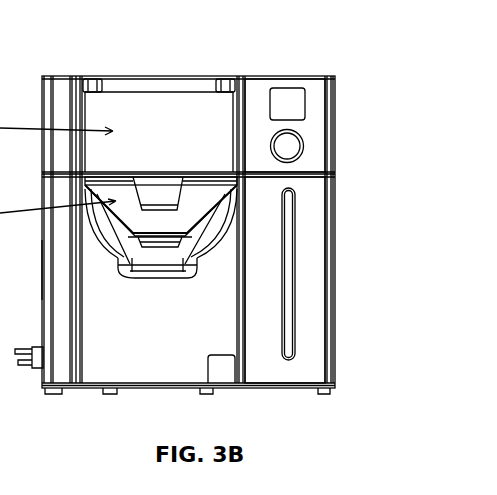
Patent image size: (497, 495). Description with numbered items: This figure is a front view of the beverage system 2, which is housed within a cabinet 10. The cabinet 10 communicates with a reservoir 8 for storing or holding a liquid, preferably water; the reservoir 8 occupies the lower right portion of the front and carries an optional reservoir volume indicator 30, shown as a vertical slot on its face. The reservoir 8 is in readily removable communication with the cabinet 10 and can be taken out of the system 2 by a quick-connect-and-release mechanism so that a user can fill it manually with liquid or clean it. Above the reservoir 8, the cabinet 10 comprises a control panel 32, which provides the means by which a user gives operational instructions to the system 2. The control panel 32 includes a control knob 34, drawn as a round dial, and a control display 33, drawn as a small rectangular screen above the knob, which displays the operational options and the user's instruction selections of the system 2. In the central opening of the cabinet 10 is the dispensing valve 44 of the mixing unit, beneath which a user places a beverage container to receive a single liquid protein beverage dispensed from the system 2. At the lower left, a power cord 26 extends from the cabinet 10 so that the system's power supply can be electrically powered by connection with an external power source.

The system 2 is at (90, 49).
The reservoir 8 is at (324, 242).
The cabinet 10 is at (51, 274).
The power cord 26 is at (18, 343).
The reservoir volume indicator 30 is at (296, 300).
The control panel 32 is at (328, 110).
The control display 33 is at (289, 91).
The control knob 34 is at (304, 156).
The dispensing valve 44 is at (153, 263).